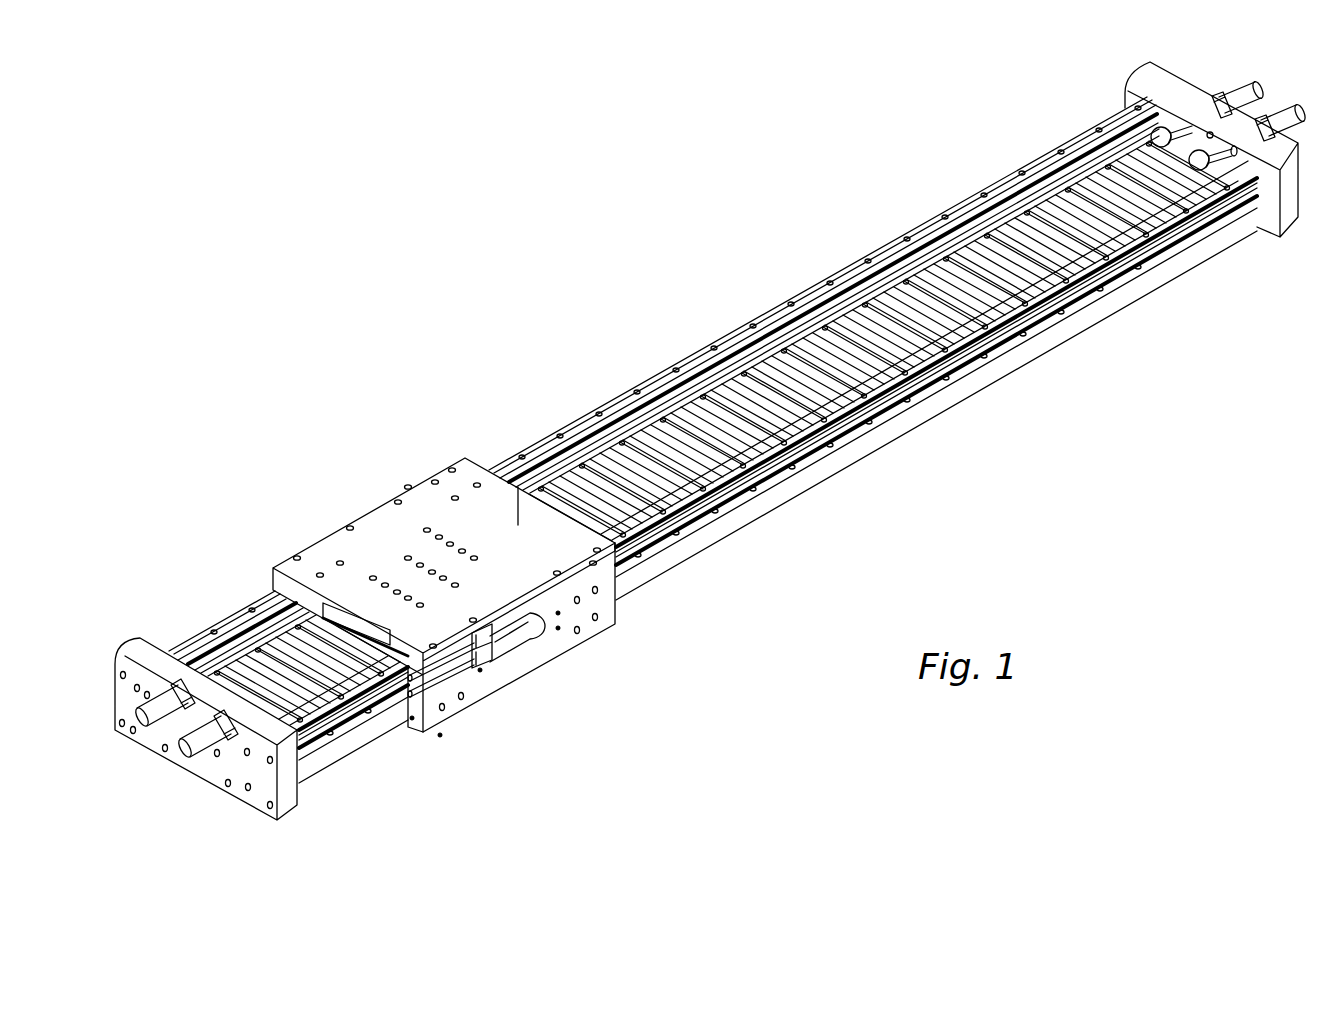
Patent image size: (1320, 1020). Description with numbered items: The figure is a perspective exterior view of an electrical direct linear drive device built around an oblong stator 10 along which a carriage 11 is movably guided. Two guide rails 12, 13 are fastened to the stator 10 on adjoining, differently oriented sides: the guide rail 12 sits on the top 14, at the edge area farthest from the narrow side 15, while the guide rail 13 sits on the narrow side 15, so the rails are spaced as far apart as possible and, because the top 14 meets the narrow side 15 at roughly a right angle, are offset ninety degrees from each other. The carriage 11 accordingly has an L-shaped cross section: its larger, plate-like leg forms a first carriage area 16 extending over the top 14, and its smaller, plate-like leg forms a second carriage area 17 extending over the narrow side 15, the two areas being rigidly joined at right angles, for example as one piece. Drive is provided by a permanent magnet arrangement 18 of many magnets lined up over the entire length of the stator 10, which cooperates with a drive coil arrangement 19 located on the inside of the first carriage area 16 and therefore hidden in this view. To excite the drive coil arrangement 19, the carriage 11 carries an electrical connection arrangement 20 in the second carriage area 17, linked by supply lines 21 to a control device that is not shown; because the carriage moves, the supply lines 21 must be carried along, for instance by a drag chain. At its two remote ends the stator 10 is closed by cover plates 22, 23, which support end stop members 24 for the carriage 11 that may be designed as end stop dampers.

The stator 10 is at (946, 193).
The carriage 11 is at (444, 594).
The guide rail 12 is at (1034, 180).
The guide rail 13 is at (1086, 297).
The top 14 is at (1133, 187).
The narrow side 15 is at (972, 372).
The first carriage area 16 is at (427, 512).
The second carriage area 17 is at (558, 652).
The permanent magnet arrangement 18 is at (702, 430).
The drive coil arrangement 19 is at (345, 620).
The electrical connection arrangement 20 is at (505, 645).
The supply lines 21 is at (455, 690).
The cover plate 22 is at (263, 780).
The cover plate 23 is at (1285, 215).
The end stop members 24 is at (267, 695).